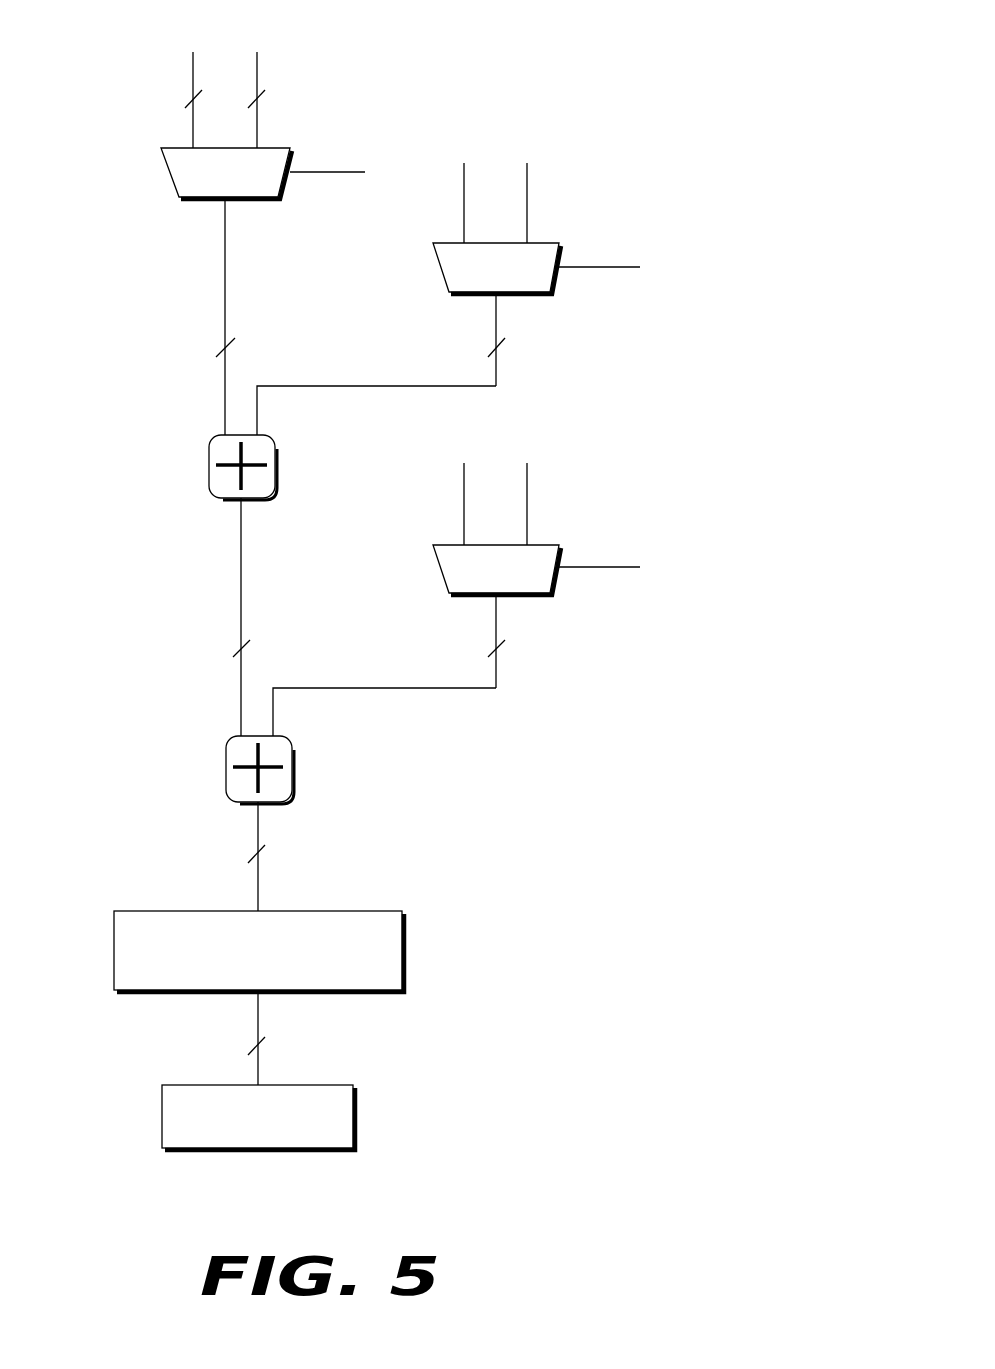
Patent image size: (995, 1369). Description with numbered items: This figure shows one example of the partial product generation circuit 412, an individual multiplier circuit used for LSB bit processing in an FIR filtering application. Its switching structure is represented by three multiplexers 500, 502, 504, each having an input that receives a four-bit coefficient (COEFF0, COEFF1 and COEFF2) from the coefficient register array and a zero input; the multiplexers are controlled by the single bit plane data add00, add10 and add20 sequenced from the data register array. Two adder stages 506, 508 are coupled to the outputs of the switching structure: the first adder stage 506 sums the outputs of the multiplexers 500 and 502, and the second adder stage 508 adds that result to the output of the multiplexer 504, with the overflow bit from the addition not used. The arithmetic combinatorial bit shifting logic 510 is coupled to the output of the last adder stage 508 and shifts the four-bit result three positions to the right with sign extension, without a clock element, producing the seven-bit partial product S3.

The partial product generation circuit 412 is at (578, 1197).
The multiplexer 500 is at (250, 198).
The multiplexer 502 is at (533, 295).
The multiplexer 504 is at (533, 596).
The adder stage 506 is at (277, 463).
The adder stage 508 is at (293, 760).
The arithmetic combinatorial bit shifting logic 510 is at (405, 937).